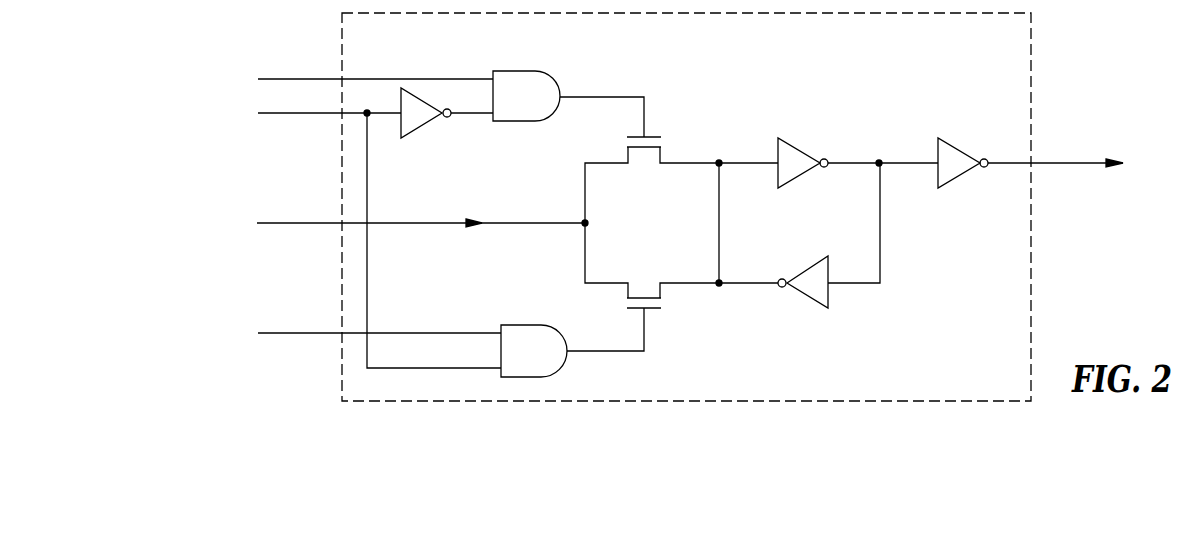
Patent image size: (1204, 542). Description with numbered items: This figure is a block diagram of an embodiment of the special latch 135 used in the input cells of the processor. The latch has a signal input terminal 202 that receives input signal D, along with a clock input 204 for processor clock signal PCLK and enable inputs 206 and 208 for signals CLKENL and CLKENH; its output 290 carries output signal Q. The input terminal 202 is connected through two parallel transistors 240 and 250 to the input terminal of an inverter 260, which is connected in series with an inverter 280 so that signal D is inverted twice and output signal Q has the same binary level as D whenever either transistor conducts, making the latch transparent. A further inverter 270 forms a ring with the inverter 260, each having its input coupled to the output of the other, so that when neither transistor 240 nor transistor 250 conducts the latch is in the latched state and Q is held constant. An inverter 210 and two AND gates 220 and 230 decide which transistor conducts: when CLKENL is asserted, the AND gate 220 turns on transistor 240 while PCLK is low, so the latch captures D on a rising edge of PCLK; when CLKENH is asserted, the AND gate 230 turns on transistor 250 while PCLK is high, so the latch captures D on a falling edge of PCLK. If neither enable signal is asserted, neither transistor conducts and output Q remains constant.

The special latch 135 is at (1031, 48).
The signal input terminal 202 is at (292, 226).
The clock input PCLK 204 is at (292, 116).
The clock enable low input CLKENL 206 is at (292, 77).
The clock enable high input CLKENH 208 is at (292, 336).
The inverter 210 is at (426, 127).
The AND gate 220 is at (516, 70).
The AND gate 230 is at (523, 324).
The transistor 240 is at (663, 156).
The transistor 250 is at (663, 288).
The inverter 260 is at (797, 142).
The inverter 270 is at (808, 302).
The inverter 280 is at (975, 141).
The output Q 290 is at (1071, 160).